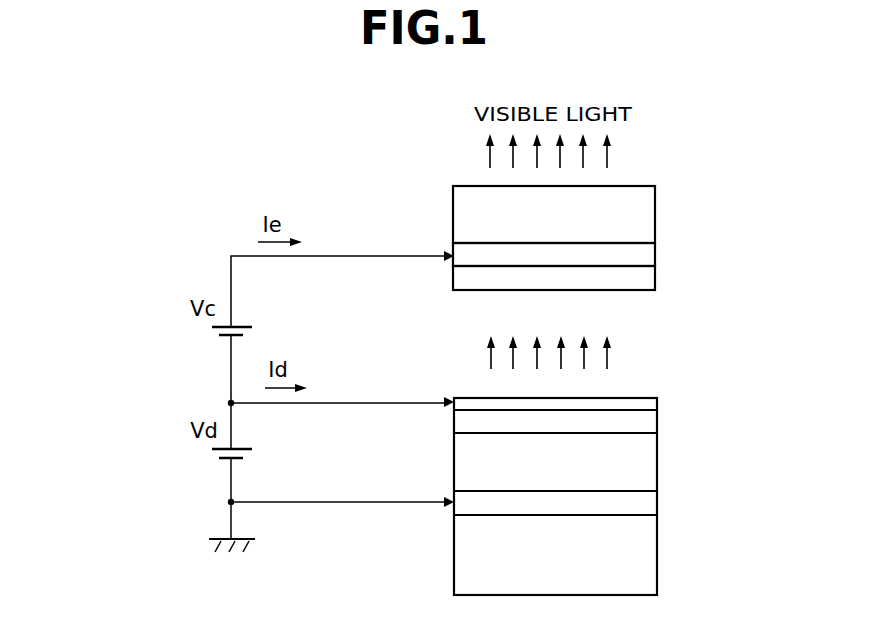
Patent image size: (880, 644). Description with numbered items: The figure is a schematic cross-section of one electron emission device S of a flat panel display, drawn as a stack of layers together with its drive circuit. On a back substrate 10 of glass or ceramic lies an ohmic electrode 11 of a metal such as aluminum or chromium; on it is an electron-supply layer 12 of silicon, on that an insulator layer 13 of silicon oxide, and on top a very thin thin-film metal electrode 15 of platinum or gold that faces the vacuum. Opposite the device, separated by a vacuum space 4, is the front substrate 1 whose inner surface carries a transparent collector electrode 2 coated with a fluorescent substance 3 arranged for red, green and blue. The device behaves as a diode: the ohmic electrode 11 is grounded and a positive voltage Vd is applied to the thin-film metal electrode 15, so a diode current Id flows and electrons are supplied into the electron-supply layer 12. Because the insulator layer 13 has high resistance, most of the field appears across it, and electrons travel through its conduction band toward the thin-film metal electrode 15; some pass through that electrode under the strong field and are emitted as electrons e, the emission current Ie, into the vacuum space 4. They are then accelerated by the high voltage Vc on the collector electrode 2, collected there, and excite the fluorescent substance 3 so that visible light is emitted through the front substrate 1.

The front substrate 1 is at (655, 218).
The transparent collector electrode 2 is at (655, 252).
The fluorescent substance 3 is at (655, 283).
The vacuum space 4 is at (565, 326).
The electron emission device S is at (684, 345).
The thin-film metal electrode 15 is at (657, 398).
The insulator layer 13 is at (657, 422).
The electron-supply layer 12 is at (657, 472).
The ohmic electrode 11 is at (657, 504).
The back substrate 10 is at (657, 566).